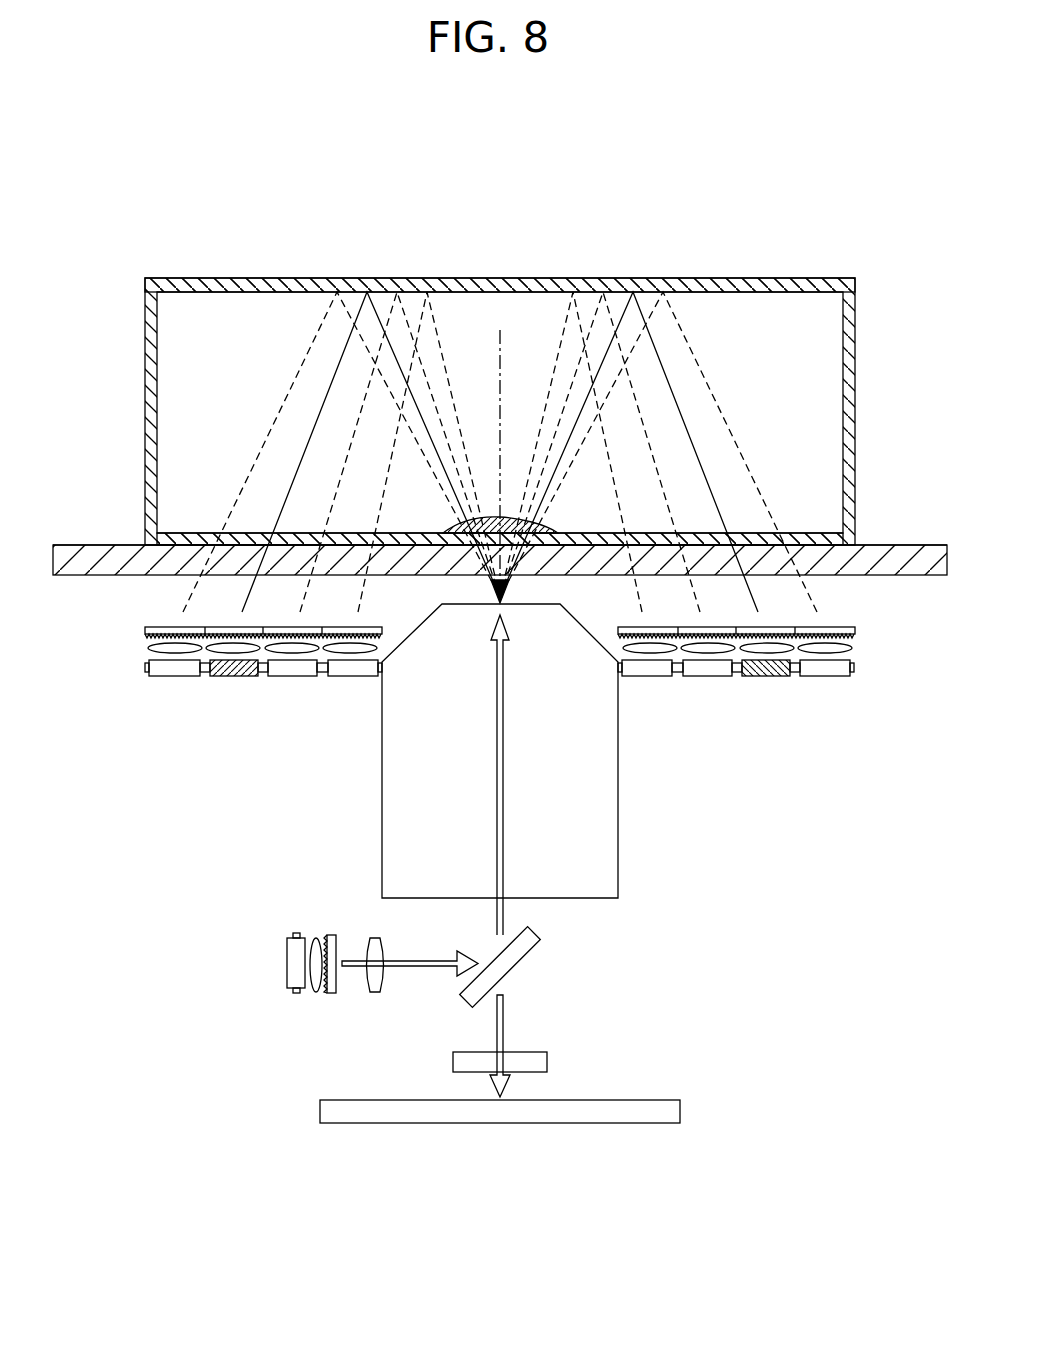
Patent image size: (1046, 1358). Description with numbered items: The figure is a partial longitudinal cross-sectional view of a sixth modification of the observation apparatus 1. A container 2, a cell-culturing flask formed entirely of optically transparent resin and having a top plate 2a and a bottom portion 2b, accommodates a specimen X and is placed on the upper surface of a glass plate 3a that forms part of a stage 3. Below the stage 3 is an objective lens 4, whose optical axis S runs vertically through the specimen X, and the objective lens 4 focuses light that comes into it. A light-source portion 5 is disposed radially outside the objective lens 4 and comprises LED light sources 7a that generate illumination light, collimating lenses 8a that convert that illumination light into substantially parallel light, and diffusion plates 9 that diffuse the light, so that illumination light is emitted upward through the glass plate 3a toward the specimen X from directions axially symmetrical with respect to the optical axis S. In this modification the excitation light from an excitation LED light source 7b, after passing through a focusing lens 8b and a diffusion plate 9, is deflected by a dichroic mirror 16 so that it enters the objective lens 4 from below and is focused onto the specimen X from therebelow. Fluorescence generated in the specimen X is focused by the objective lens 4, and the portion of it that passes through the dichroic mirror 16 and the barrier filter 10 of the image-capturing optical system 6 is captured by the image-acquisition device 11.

The observation apparatus 1 is at (125, 152).
The container 2 is at (500, 363).
The top plate 2a is at (447, 278).
The bottom wall of box 2b is at (797, 533).
The stage 3 is at (500, 511).
The glass plate 3a is at (103, 543).
The optical axis S is at (500, 447).
The specimen X is at (488, 520).
The objective lens 4 is at (618, 868).
The light-source portion 5 is at (502, 704).
The image-capturing optical system 6 is at (636, 793).
The LED light sources 7a is at (175, 678).
The LED light sources 7b is at (287, 962).
The collimating lenses 8a is at (145, 648).
The focusing lenses 8b is at (316, 937).
The diffusion plates 9 is at (145, 628).
The barrier filter 10 is at (547, 1062).
The image-acquisition device 11 is at (530, 1125).
The dichroic mirror 16 is at (540, 930).